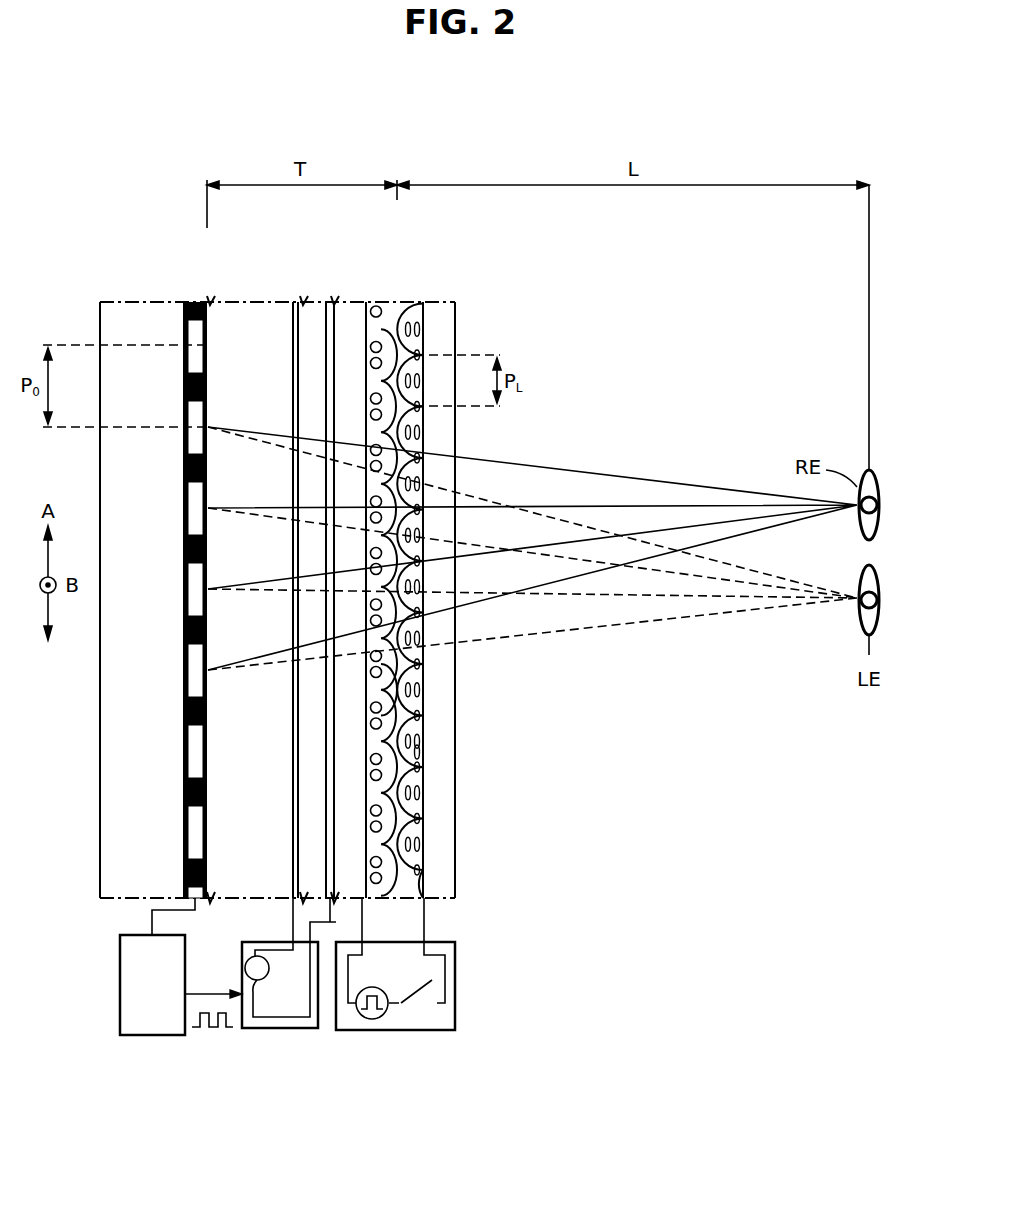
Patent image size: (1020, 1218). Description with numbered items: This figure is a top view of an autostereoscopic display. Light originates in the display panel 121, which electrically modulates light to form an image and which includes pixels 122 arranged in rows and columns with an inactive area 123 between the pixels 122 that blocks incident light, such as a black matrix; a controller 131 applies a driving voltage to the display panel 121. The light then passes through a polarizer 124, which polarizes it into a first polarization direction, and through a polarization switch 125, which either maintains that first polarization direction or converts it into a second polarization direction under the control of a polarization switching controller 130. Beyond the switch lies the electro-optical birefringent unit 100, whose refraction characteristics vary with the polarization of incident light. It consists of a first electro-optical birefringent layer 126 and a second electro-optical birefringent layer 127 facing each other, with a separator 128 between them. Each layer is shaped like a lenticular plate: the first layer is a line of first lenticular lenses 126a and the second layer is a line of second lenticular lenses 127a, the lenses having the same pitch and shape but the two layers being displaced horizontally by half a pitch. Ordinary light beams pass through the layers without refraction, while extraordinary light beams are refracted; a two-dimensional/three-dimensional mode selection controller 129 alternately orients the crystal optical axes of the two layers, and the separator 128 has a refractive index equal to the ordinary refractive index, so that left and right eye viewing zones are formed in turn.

The electro-optical birefringent unit 100 is at (350, 244).
The display panel 121 is at (303, 279).
The pixels 122 is at (190, 787).
The inactive area 123 is at (192, 835).
The polarizer 124 is at (298, 300).
The polarization switch 125 is at (331, 300).
The first electro-optical birefringent layer 126 is at (386, 300).
The first lenticular lenses 126a is at (412, 714).
The second electro-optical birefringent layer 127 is at (420, 300).
The second lenticular lenses 127a is at (423, 785).
The separator 128 is at (402, 302).
The 2D-3D mode selection controller 129 is at (392, 1030).
The polarization switching controller 130 is at (278, 1028).
The controller 131 is at (152, 1035).